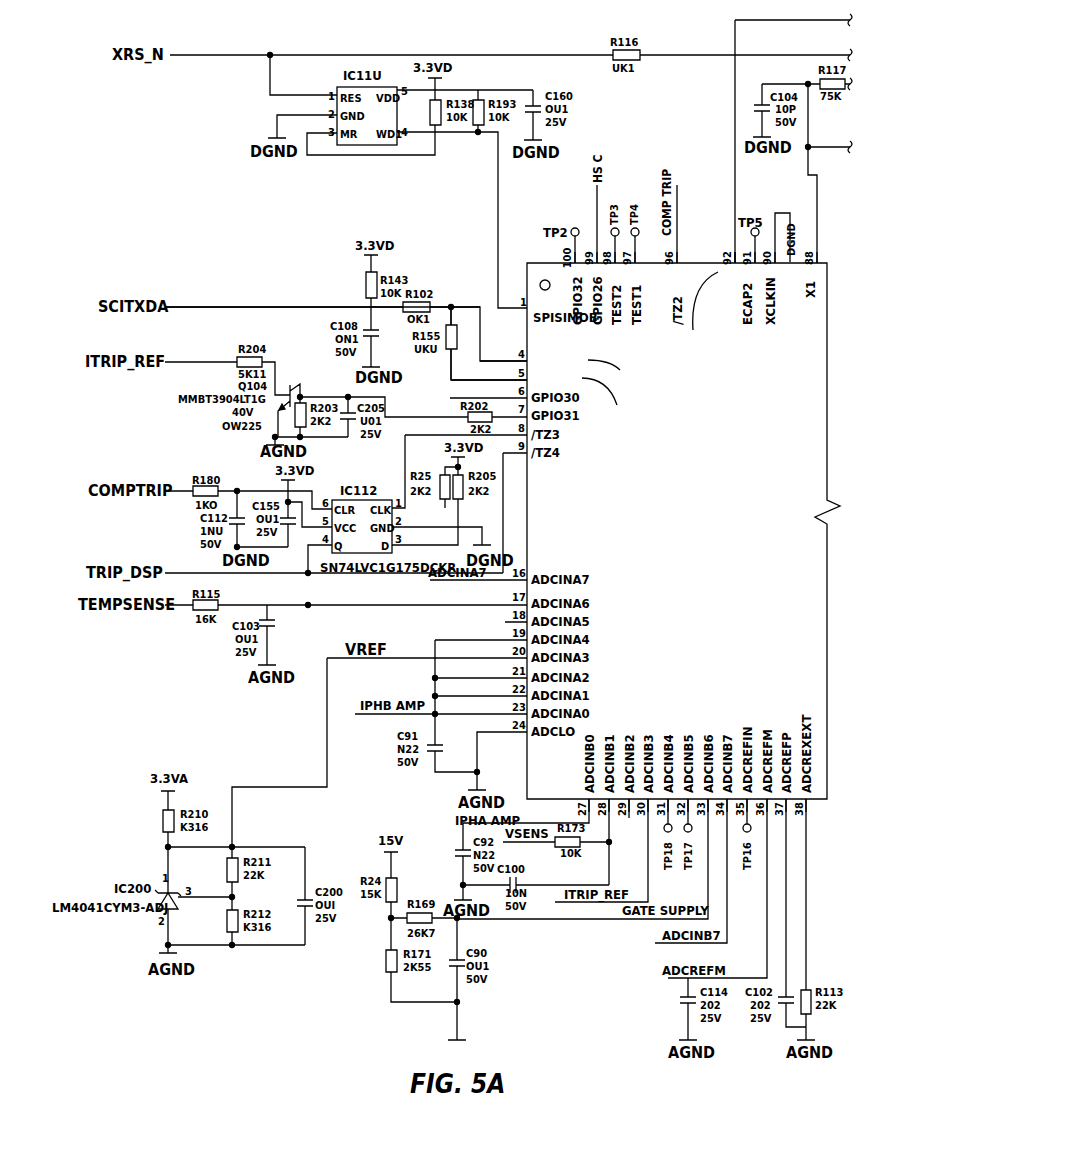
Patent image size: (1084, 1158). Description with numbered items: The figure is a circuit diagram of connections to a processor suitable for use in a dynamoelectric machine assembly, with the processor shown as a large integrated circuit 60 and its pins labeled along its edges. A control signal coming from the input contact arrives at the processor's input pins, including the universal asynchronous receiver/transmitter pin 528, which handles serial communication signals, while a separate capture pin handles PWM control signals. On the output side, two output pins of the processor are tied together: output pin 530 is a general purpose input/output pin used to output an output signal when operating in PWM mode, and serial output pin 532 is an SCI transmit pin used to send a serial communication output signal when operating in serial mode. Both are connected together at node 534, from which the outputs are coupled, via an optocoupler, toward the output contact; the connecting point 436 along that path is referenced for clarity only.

The microcontroller IC108 TMS320F2802 60 is at (683, 531).
The UART pin 528 is at (709, 305).
The output pin 530 is at (548, 400).
The serial output pin 532 is at (572, 369).
The node 534 is at (452, 298).
The node 436 is at (146, 290).